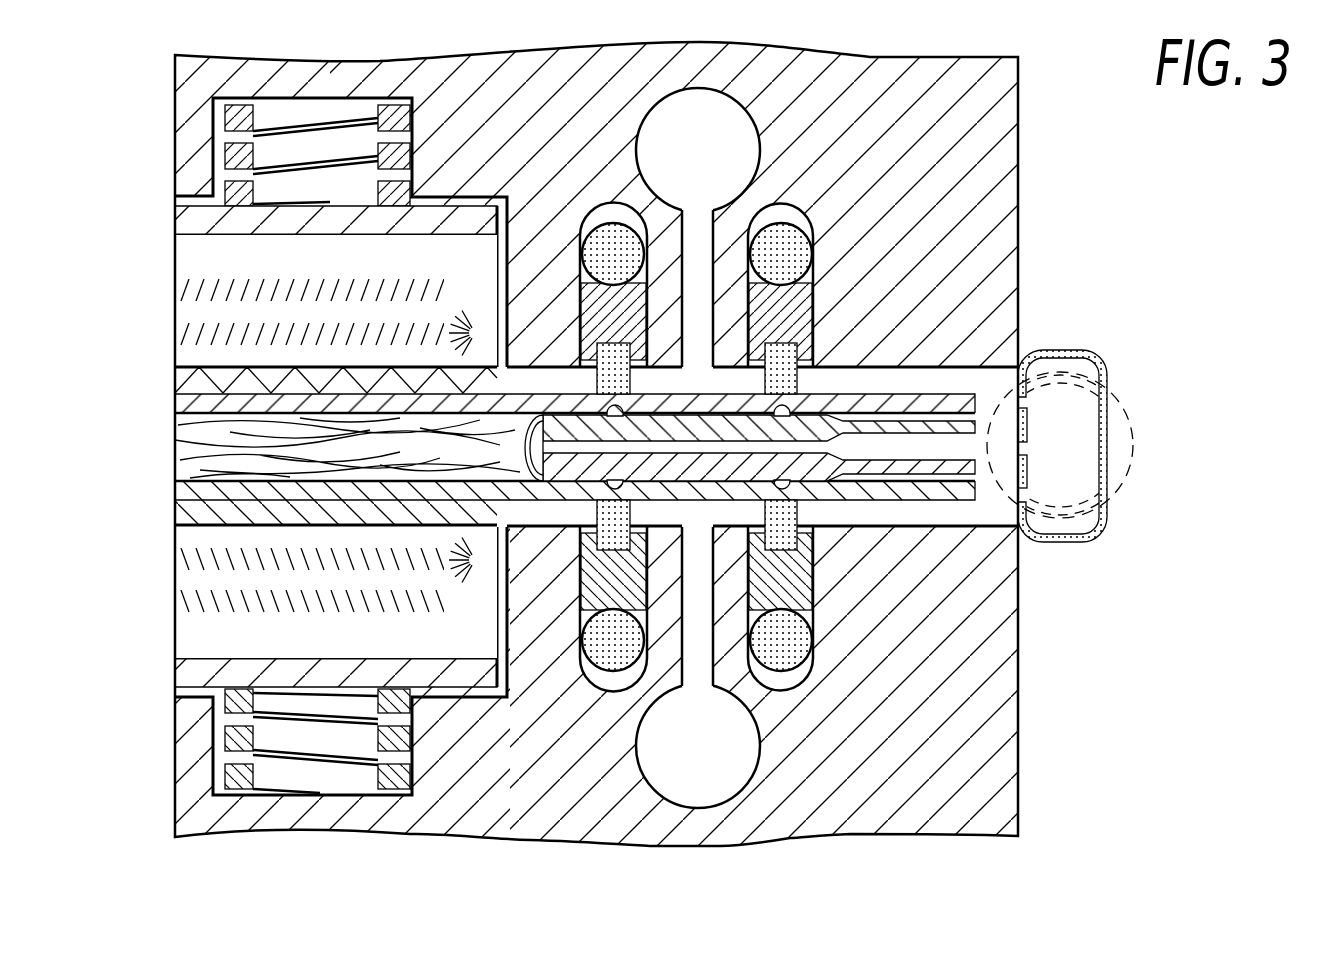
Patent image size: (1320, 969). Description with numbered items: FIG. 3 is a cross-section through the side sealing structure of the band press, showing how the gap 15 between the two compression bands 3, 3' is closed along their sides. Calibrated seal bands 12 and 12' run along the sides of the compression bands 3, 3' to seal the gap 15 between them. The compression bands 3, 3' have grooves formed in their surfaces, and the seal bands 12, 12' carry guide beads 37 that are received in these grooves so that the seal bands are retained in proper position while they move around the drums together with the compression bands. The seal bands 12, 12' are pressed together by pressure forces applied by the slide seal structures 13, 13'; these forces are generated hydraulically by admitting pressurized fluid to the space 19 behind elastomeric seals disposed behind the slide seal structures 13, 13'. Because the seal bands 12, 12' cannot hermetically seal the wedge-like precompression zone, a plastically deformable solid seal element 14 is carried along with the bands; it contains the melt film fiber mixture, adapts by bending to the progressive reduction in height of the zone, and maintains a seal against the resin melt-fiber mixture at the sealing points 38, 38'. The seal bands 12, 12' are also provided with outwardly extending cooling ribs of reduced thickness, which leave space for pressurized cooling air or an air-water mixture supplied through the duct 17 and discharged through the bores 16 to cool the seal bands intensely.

The compression band 3 is at (310, 389).
The compression band 3' is at (314, 503).
The seal band 12 is at (742, 365).
The seal band 12' is at (742, 534).
The slide seal structure 13 is at (698, 227).
The slide seal structure 13' is at (698, 667).
The seal element 14 is at (458, 396).
The gap 15 is at (570, 445).
The bore 16 is at (1030, 418).
The duct 17 is at (1128, 458).
The space 19 is at (763, 673).
The guide bead 37 is at (795, 390).
The sealing point 38 is at (339, 296).
The sealing point 38' is at (337, 607).